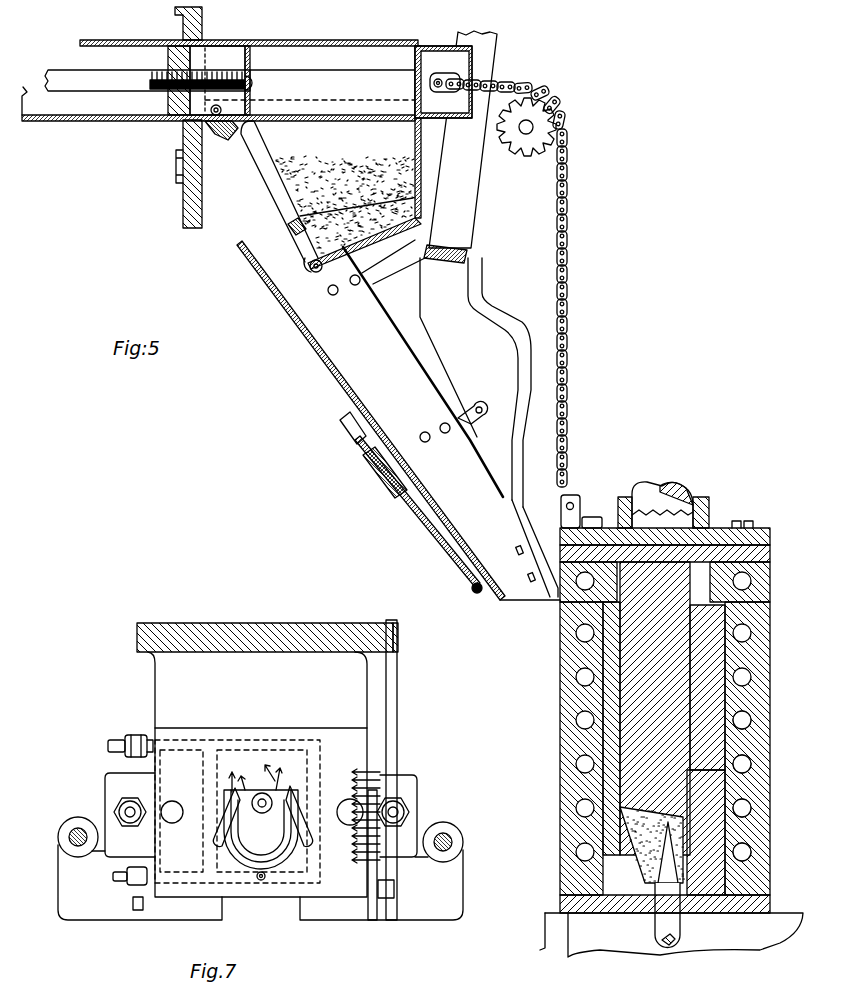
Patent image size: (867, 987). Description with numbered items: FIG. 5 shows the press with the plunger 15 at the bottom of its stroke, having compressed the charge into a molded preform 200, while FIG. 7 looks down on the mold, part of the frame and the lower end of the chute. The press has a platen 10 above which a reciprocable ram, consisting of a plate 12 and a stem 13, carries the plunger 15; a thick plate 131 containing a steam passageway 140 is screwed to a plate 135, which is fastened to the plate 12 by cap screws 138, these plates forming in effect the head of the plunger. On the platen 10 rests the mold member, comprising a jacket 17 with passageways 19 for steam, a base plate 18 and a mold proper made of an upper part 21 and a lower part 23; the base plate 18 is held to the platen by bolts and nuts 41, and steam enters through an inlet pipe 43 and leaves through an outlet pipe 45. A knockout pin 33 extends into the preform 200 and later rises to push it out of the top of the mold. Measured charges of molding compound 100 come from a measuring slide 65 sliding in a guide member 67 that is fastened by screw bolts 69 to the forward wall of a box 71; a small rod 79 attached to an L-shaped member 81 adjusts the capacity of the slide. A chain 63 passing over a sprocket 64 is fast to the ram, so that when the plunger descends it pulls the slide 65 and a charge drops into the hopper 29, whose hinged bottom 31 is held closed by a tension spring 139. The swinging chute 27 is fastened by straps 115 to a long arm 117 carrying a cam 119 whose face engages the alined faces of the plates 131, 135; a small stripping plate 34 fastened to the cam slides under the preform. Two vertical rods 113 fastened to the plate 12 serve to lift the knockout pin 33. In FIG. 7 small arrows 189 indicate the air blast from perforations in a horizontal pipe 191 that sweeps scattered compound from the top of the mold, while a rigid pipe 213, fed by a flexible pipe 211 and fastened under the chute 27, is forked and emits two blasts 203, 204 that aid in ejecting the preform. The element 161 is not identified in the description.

In FIG. 5, the platen 10 is at (762, 946).
In FIG. 7, the platen 10 is at (358, 674).
In FIG. 5, the plate 12 is at (709, 527).
In FIG. 5, the stem 13 is at (672, 500).
In FIG. 5, the plunger 15 is at (632, 648).
In FIG. 5, the jacket 17 is at (766, 638).
In FIG. 7, the jacket 17 is at (170, 738).
In FIG. 5, the base plate 18 is at (768, 906).
In FIG. 7, the base plate 18 is at (116, 781).
In FIG. 5, the passageways 19 is at (746, 720).
In FIG. 5, the upper part 21 is at (716, 701).
In FIG. 5, the lower part 23 is at (716, 799).
In FIG. 5, the swinging chute 27 is at (398, 420).
In FIG. 7, the swinging chute 27 is at (260, 864).
In FIG. 5, the hopper 29 is at (414, 135).
In FIG. 5, the hinged bottom 31 is at (316, 269).
In FIG. 5, the knockout pin 33 is at (682, 925).
In FIG. 7, the knockout pin 33 is at (262, 813).
In FIG. 5, the small plate 34 is at (510, 520).
In FIG. 7, the bolts and nuts 41 is at (128, 812).
In FIG. 7, the inlet pipe 43 is at (118, 745).
In FIG. 7, the outlet pipe 45 is at (116, 883).
In FIG. 5, the chain 63 is at (568, 225).
In FIG. 5, the sprocket 64 is at (528, 105).
In FIG. 5, the measuring slide 65 is at (188, 50).
In FIG. 5, the guide member 67 is at (98, 122).
In FIG. 5, the screw bolts 69 is at (176, 168).
In FIG. 5, the box 71 is at (190, 206).
In FIG. 5, the small rod 79 is at (72, 82).
In FIG. 5, the L-shaped member 81 is at (249, 60).
In FIG. 5, the molding compound 100 is at (306, 184).
In FIG. 7, the vertical rods 113 is at (76, 834).
In FIG. 5, the straps 115 is at (404, 259).
In FIG. 5, the long arm 117 is at (470, 184).
In FIG. 5, the cam 119 is at (490, 316).
In FIG. 5, the thick plate 131 is at (768, 595).
In FIG. 5, the plate 135 is at (762, 553).
In FIG. 5, the cap screws 138 is at (756, 525).
In FIG. 5, the tension spring 139 is at (222, 135).
In FIG. 5, the passageway 140 is at (745, 584).
In FIG. 7, the lug 161 is at (64, 849).
In FIG. 7, the small arrows 189 is at (356, 765).
In FIG. 7, the horizontal pipe 191 is at (398, 695).
In FIG. 5, the molded preform 200 is at (622, 822).
In FIG. 7, the small arrows 203 is at (238, 772).
In FIG. 7, the small arrows 204 is at (272, 766).
In FIG. 5, the flexible pipe 211 is at (341, 432).
In FIG. 5, the rigid pipe 213 is at (430, 538).
In FIG. 7, the rigid pipe 213 is at (215, 833).